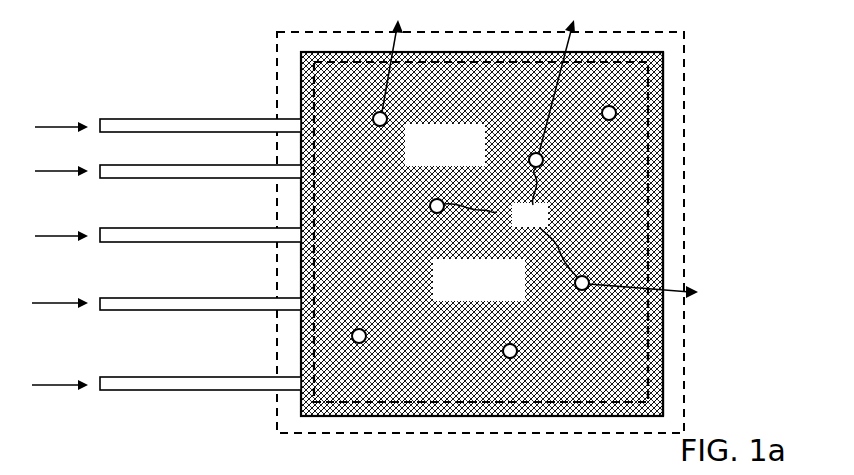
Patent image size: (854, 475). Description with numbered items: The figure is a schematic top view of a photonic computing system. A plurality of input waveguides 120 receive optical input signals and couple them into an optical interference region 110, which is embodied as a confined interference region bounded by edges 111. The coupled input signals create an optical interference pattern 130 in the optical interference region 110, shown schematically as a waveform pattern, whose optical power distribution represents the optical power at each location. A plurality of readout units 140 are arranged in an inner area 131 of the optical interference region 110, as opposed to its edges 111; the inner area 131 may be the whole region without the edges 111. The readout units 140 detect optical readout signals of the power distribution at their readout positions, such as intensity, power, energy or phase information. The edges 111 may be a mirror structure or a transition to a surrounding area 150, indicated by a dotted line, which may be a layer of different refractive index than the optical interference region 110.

The optical interference region 110 is at (498, 295).
The edges 111 is at (663, 222).
The input waveguides 120 is at (183, 122).
The optical interference pattern 130 is at (618, 165).
The inner area 131 is at (650, 327).
The readout units 140 is at (529, 160).
The surrounding area 150 is at (685, 45).